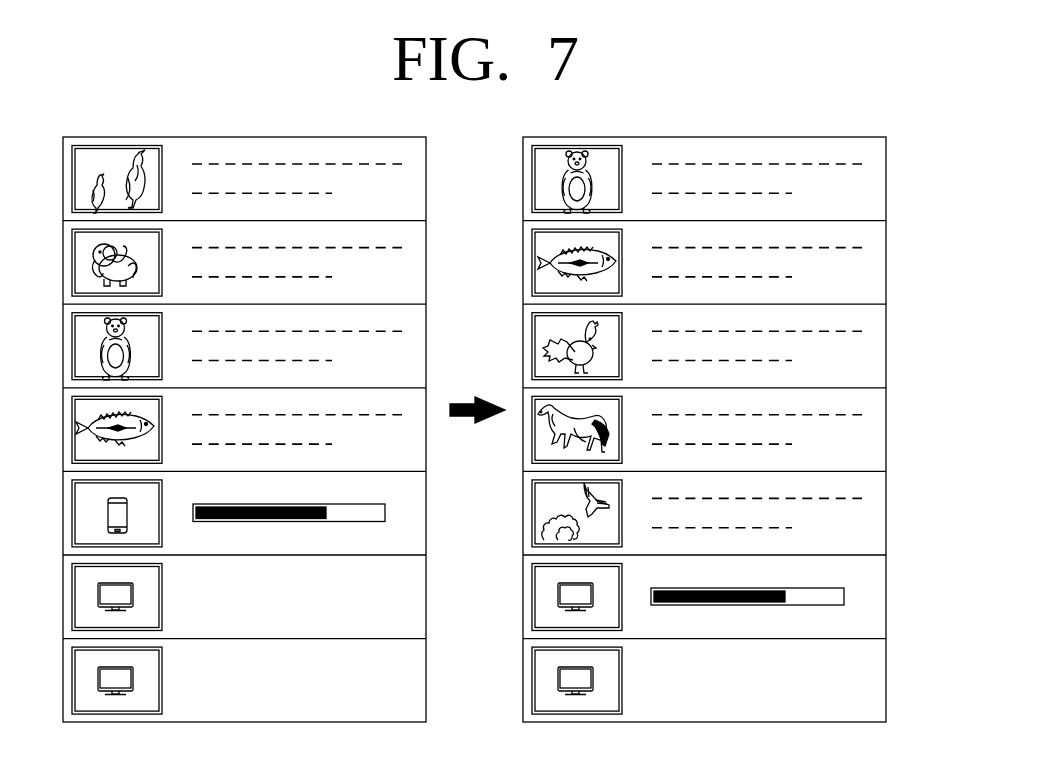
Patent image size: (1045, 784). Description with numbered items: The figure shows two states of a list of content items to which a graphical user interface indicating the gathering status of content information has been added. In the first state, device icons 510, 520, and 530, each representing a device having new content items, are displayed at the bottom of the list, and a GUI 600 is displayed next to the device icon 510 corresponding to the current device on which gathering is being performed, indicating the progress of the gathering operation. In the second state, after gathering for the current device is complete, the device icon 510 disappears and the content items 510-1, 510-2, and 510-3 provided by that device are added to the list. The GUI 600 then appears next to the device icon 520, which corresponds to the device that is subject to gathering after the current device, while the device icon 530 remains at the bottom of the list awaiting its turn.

The device icon 510 is at (71, 512).
The content item 510-1 is at (523, 344).
The content item 510-2 is at (523, 438).
The content item 510-3 is at (523, 531).
The device icon 520 is at (71, 584).
The device icon 530 is at (71, 669).
The GUI 600 is at (385, 504).